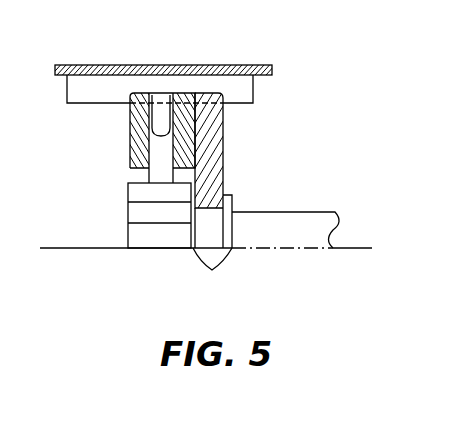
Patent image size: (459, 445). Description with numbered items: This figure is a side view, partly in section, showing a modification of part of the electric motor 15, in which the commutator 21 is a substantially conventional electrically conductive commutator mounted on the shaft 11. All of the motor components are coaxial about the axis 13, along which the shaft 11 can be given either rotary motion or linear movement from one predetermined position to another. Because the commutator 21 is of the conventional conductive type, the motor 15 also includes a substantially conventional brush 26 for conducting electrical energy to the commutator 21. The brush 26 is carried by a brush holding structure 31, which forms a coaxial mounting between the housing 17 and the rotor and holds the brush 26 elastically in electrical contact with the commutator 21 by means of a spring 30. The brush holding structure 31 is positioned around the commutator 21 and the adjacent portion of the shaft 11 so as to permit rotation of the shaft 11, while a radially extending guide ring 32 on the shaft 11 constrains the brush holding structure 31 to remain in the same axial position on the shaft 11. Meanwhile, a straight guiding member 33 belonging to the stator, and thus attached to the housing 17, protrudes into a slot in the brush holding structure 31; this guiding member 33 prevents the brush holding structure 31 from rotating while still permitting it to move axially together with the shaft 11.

The shaft 11 is at (279, 223).
The axis 13 is at (357, 248).
The electric motor 15 is at (282, 115).
The housing 17 is at (152, 65).
The commutator 21 is at (126, 214).
The brush 26 is at (156, 177).
The spring 30 is at (152, 128).
The brush holding structure 31 is at (226, 148).
The guide ring 32 is at (212, 249).
The straight guiding member 33 is at (128, 100).